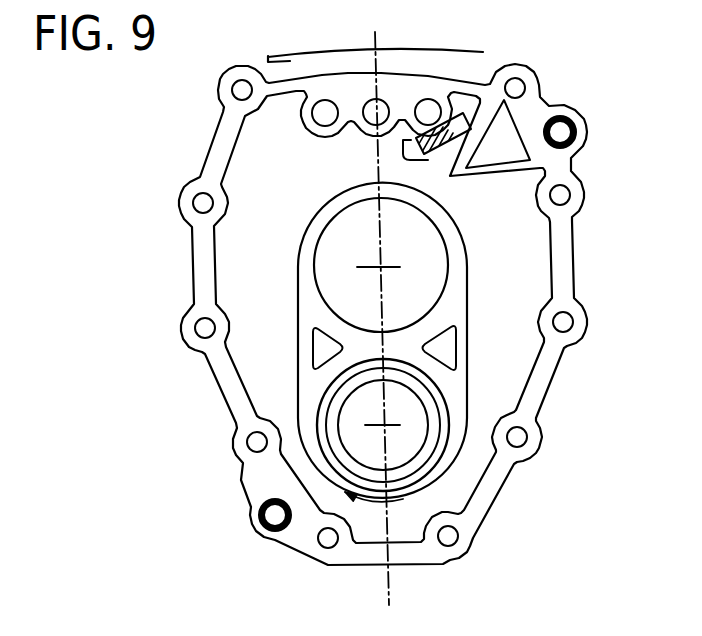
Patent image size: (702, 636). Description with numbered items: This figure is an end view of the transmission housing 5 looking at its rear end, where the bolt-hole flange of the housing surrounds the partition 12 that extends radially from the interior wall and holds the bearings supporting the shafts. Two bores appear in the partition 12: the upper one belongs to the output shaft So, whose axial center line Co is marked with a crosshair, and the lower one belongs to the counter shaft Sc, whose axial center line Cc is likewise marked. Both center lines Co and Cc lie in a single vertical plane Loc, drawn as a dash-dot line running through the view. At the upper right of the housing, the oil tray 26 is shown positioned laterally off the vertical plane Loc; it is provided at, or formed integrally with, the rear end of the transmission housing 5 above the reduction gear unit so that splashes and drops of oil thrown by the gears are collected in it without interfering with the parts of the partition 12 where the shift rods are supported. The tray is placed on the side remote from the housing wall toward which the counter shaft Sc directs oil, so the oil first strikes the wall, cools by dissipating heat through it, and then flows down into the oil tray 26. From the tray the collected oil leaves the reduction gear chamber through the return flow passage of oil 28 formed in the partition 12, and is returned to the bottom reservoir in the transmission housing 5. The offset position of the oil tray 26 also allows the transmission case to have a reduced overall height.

The transmission housing 5 is at (570, 362).
The partition 12 is at (527, 255).
The oil tray 26 is at (480, 147).
The return flow passage of oil 28 is at (487, 54).
The output shaft So is at (340, 262).
The axial center line of the output shaft Co is at (360, 268).
The counter shaft Sc is at (405, 432).
The axial center line of the counter shaft Cc is at (385, 422).
The vertical plane Loc is at (392, 584).